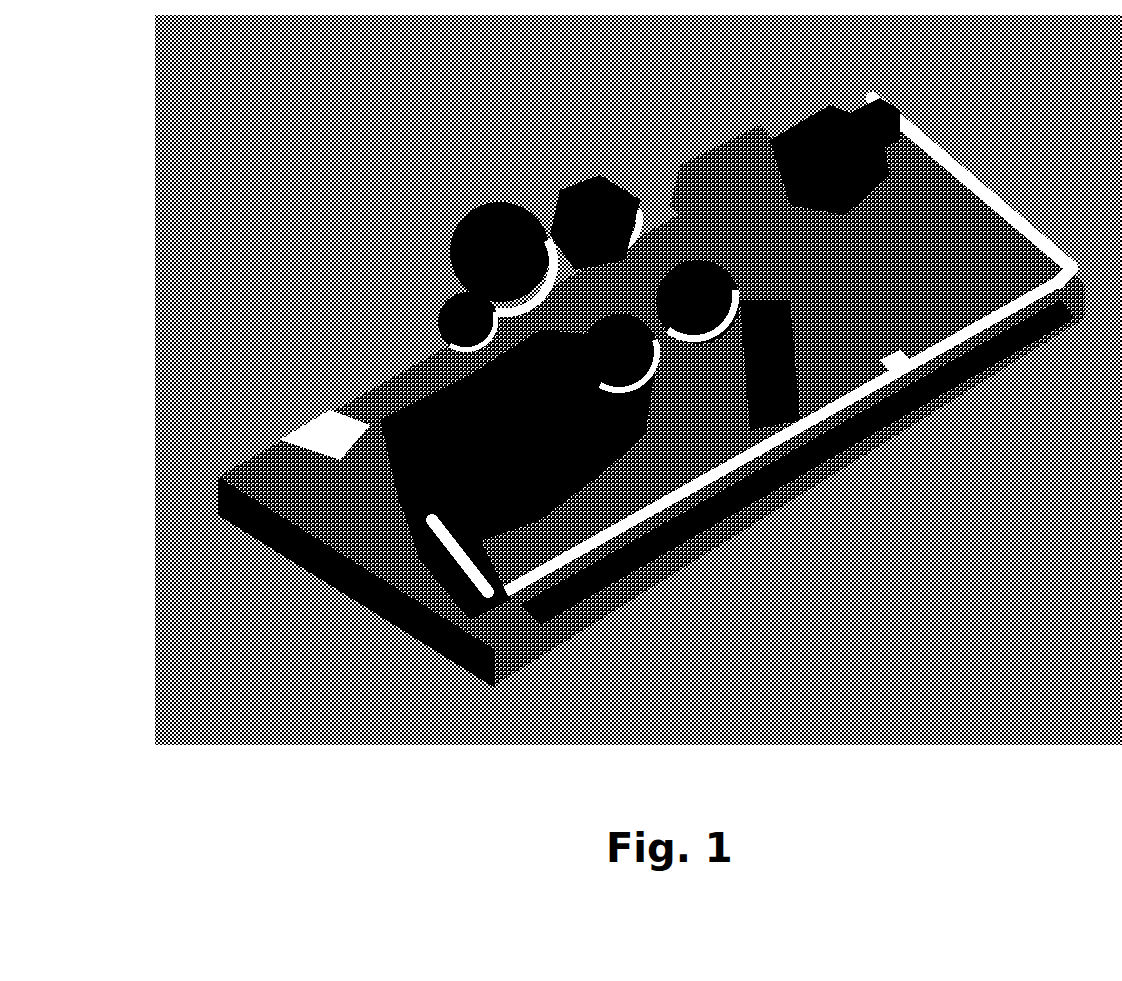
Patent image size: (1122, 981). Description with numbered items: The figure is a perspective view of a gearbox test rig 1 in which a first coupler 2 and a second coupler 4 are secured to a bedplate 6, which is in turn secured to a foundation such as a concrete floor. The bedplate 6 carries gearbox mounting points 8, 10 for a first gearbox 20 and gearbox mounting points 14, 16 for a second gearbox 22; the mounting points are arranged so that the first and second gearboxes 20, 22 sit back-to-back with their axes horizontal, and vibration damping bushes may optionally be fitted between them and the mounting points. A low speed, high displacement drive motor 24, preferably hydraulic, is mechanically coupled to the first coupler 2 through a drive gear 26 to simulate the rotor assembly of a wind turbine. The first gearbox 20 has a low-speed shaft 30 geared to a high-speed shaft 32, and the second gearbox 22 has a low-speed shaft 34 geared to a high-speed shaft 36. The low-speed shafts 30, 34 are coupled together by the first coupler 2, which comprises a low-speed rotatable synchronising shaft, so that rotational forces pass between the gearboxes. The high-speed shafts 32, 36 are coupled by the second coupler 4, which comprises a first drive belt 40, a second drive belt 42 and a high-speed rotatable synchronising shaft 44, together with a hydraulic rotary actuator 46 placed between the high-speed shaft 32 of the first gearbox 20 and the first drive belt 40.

The gearbox test rig 1 is at (226, 201).
The first coupler 2 is at (690, 375).
The second coupler 4 is at (850, 396).
The bedplate 6 is at (345, 578).
The gearbox mounting point 8 is at (577, 185).
The gearbox mounting point 10 is at (776, 310).
The gearbox mounting point 14 is at (455, 320).
The gearbox mounting point 16 is at (605, 430).
The first gearbox 20 is at (728, 203).
The second gearbox 22 is at (447, 407).
The drive motor 24 is at (613, 175).
The drive gear 26 is at (517, 227).
The low-speed shaft 30 is at (680, 255).
The high-speed shaft 32 is at (803, 160).
The low-speed shaft 34 is at (640, 349).
The high-speed shaft 36 is at (480, 495).
The first drive belt 40 is at (985, 175).
The second drive belt 42 is at (468, 575).
The high-speed rotatable synchronising shaft 44 is at (900, 362).
The hydraulic rotary actuator 46 is at (856, 116).